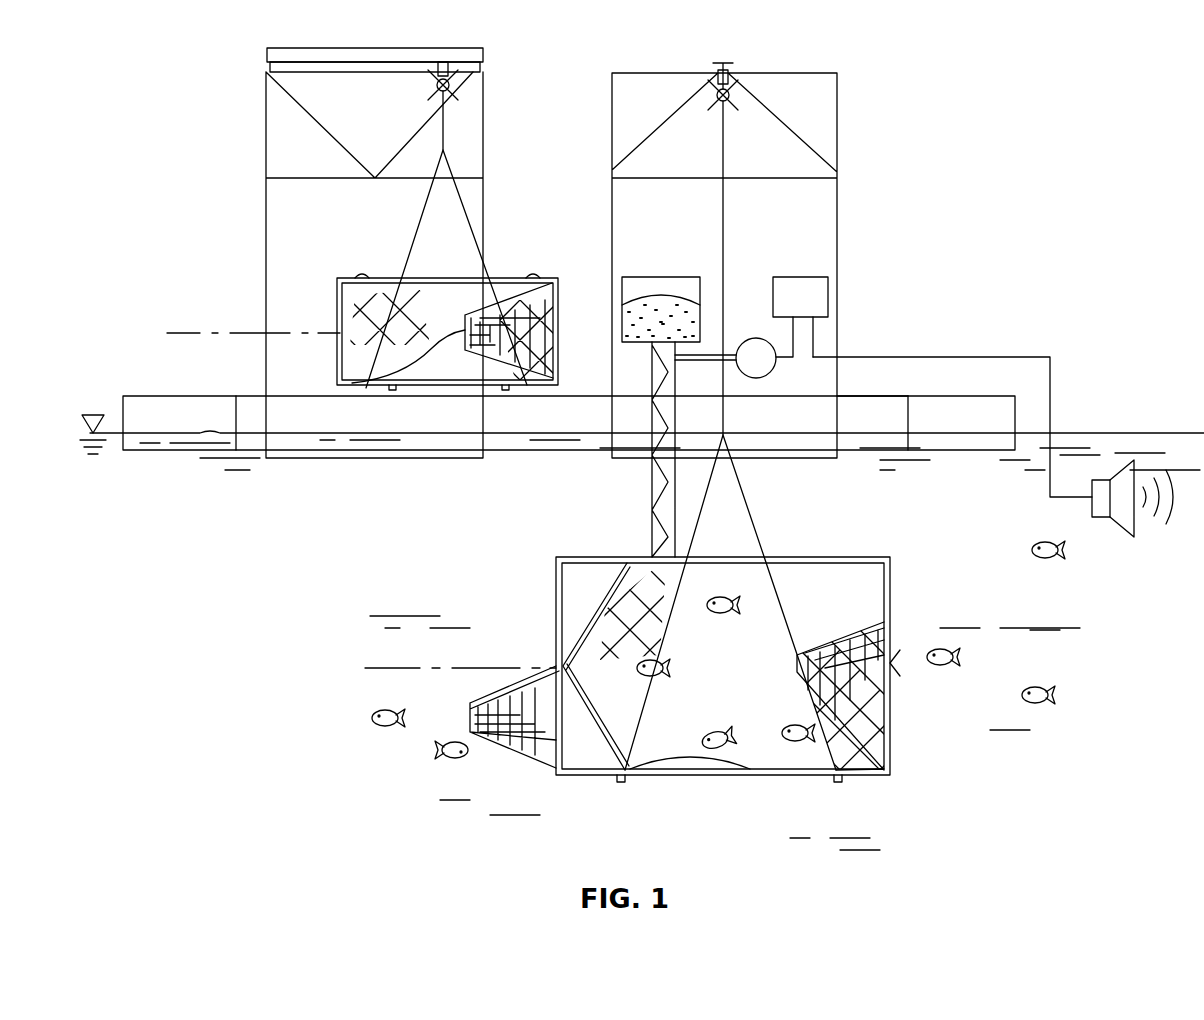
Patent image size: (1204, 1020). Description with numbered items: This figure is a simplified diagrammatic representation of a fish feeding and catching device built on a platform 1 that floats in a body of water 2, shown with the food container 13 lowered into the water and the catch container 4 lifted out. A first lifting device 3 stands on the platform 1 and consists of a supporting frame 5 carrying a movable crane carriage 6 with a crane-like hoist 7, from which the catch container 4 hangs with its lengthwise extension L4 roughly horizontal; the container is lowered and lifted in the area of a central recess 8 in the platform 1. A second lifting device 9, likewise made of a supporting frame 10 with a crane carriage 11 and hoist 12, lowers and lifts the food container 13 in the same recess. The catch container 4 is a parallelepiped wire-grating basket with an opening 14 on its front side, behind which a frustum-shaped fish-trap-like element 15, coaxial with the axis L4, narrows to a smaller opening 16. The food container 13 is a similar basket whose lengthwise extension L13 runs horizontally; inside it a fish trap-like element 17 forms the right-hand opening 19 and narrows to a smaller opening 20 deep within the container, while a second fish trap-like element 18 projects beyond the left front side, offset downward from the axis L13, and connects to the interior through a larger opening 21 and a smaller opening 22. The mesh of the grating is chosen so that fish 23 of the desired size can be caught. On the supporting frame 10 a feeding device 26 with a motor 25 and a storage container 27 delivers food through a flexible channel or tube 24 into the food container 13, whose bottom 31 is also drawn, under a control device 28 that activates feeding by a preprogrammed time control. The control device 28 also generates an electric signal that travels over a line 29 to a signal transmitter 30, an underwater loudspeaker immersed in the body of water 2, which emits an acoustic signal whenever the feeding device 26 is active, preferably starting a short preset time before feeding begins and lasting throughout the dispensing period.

The platform 1 is at (972, 412).
The body of water 2 is at (1157, 433).
The first lifting device 3 is at (262, 217).
The catch container 4 is at (380, 293).
The supporting frame 5 is at (265, 130).
The crane carriage 6 is at (448, 82).
The hoist 7 is at (480, 226).
The central recess 8 is at (874, 412).
The second lifting device 9 is at (860, 205).
The supporting frame 10 is at (837, 128).
The crane carriage 11 is at (728, 92).
The hoist 12 is at (724, 206).
The food container 13 is at (850, 775).
The opening 14 is at (544, 334).
The fish-trap-like element 15 is at (530, 385).
The opening 16 is at (352, 382).
The fish trap-like element 17 is at (885, 722).
The fish trap-like element 18 is at (517, 745).
The opening 19 is at (880, 640).
The opening 20 is at (797, 667).
The opening 21 is at (563, 770).
The opening 22 is at (465, 715).
The fish 23 is at (1038, 687).
The feed conveyor tube 24 is at (652, 482).
The motor 25 is at (762, 369).
The feeding device 26 is at (673, 270).
The storage container 27 is at (690, 292).
The control device 28 is at (822, 296).
The line 29 is at (1050, 384).
The signal transmitter 30 is at (1103, 510).
The cage bottom 31 is at (672, 775).
The lengthwise extension L4 is at (200, 337).
The lengthwise extension L13 is at (403, 660).